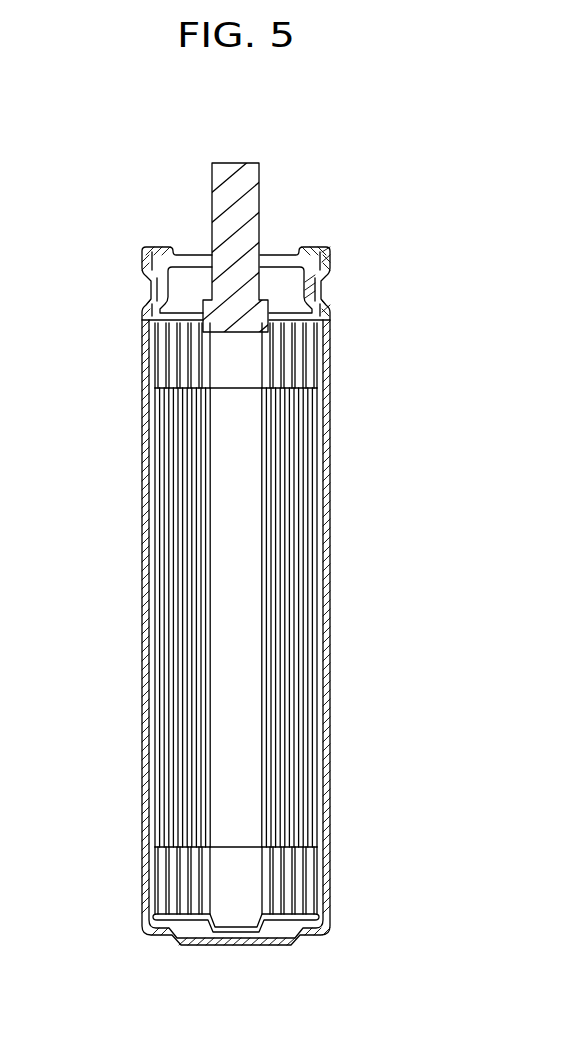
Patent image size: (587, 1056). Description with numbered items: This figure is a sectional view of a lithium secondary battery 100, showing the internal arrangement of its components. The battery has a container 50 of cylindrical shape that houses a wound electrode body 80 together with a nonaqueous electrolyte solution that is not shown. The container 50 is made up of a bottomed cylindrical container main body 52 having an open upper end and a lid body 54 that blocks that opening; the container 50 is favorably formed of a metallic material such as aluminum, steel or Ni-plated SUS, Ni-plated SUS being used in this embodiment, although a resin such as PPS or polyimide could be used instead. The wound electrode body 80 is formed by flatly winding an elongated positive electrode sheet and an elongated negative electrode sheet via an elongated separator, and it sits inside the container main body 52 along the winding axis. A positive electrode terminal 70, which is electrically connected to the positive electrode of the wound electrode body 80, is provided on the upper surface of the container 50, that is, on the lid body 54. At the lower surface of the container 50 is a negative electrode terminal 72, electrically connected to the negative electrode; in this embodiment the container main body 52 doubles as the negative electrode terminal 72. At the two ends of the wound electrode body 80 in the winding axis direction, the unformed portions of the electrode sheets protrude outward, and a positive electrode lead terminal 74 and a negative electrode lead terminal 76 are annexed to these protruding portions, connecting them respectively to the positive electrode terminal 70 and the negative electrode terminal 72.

The lithium secondary battery 100 is at (362, 224).
The container 50 is at (141, 729).
The container main body 52 is at (330, 706).
The lid body 54 is at (200, 258).
The positive electrode terminal 70 is at (250, 163).
The negative electrode terminal 72 is at (278, 943).
The positive electrode lead terminal 74 is at (285, 316).
The negative electrode lead terminal 76 is at (160, 921).
The wound electrode body 80 is at (157, 849).